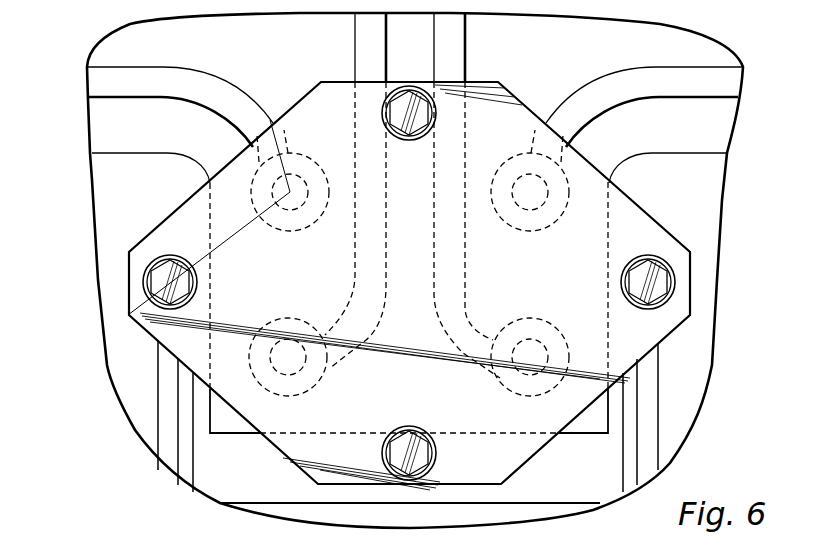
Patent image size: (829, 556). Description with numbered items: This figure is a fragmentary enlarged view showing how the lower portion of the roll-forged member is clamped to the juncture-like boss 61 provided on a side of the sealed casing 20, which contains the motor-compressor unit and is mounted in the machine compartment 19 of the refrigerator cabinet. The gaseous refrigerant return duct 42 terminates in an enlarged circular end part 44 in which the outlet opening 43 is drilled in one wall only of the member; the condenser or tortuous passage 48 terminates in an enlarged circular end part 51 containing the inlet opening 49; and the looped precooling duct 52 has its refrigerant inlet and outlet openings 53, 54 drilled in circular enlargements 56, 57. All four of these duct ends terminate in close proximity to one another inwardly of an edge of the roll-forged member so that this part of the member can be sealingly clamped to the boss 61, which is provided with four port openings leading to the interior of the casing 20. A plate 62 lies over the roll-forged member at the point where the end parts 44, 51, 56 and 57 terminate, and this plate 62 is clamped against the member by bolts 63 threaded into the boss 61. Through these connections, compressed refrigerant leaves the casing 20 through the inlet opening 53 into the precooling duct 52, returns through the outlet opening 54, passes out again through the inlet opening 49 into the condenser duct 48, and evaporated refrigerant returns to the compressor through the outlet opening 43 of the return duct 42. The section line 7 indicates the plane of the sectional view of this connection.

The section line 7- 7 is at (247, 153).
The machine compartment 19 is at (688, 366).
The sealed casing 20 is at (298, 510).
The gaseous refrigerant return duct 42 is at (218, 83).
The outlet opening 43 is at (302, 210).
The enlarged circular end part 44 is at (270, 230).
The tortuous passage 48 is at (365, 43).
The inlet opening 49 is at (268, 356).
The enlarged circular end part 51 is at (285, 395).
The precooling duct 52 is at (598, 85).
The refrigerant inlet opening 53 is at (512, 207).
The refrigerant outlet opening 54 is at (542, 343).
The circular enlargement 56 is at (568, 208).
The circular enlargement 57 is at (525, 316).
The juncture-like boss 61 is at (563, 480).
The plate 62 is at (195, 220).
The bolts 63 is at (420, 120).